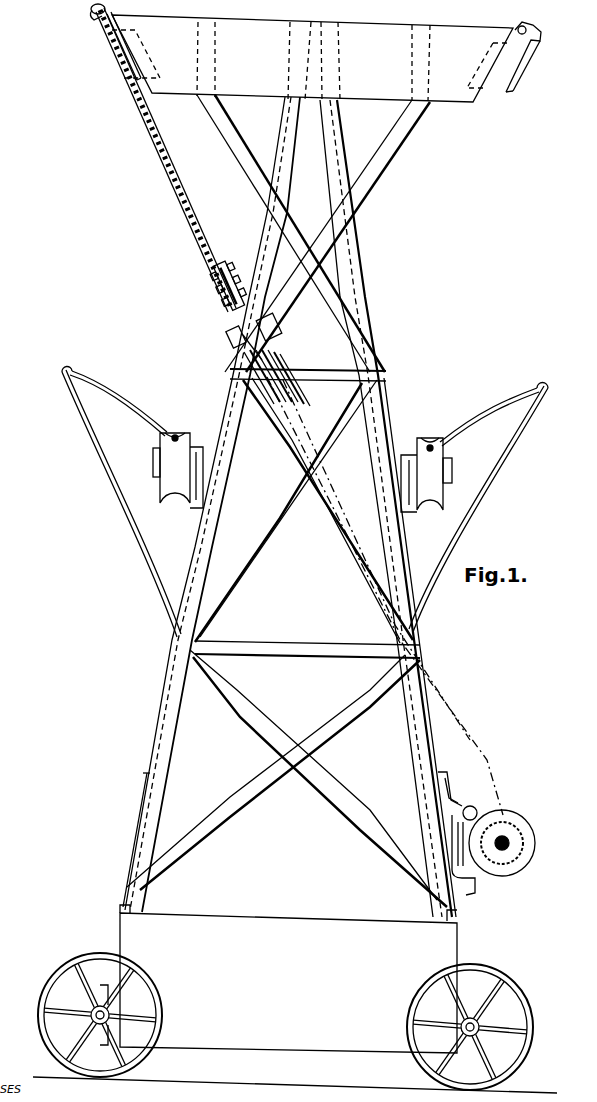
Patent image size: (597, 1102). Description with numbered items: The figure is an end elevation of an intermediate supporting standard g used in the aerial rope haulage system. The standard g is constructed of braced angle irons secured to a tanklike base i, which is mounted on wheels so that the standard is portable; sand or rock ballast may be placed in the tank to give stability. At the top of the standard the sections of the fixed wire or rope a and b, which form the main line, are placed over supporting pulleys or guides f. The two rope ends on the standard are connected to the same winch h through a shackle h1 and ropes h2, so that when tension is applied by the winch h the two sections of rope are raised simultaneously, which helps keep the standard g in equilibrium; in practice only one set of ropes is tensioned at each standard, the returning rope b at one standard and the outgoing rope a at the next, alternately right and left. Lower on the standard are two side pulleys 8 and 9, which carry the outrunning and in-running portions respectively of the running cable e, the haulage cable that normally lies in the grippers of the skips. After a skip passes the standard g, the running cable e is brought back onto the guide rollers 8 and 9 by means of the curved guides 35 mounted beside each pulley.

The fixed wire or rope (outgoing) a is at (157, 147).
The fixed wire or rope (returning) b is at (536, 35).
The supporting pulleys or guides f is at (118, 75).
The portable standard g is at (383, 404).
The winch h is at (498, 834).
The shackle h1 is at (230, 298).
The ropes h2 is at (367, 614).
The running cable e is at (175, 436).
The side pulley 8 is at (170, 490).
The side pulley 9 is at (437, 493).
The guides 35 is at (124, 408).
The tanklike base i is at (288, 979).